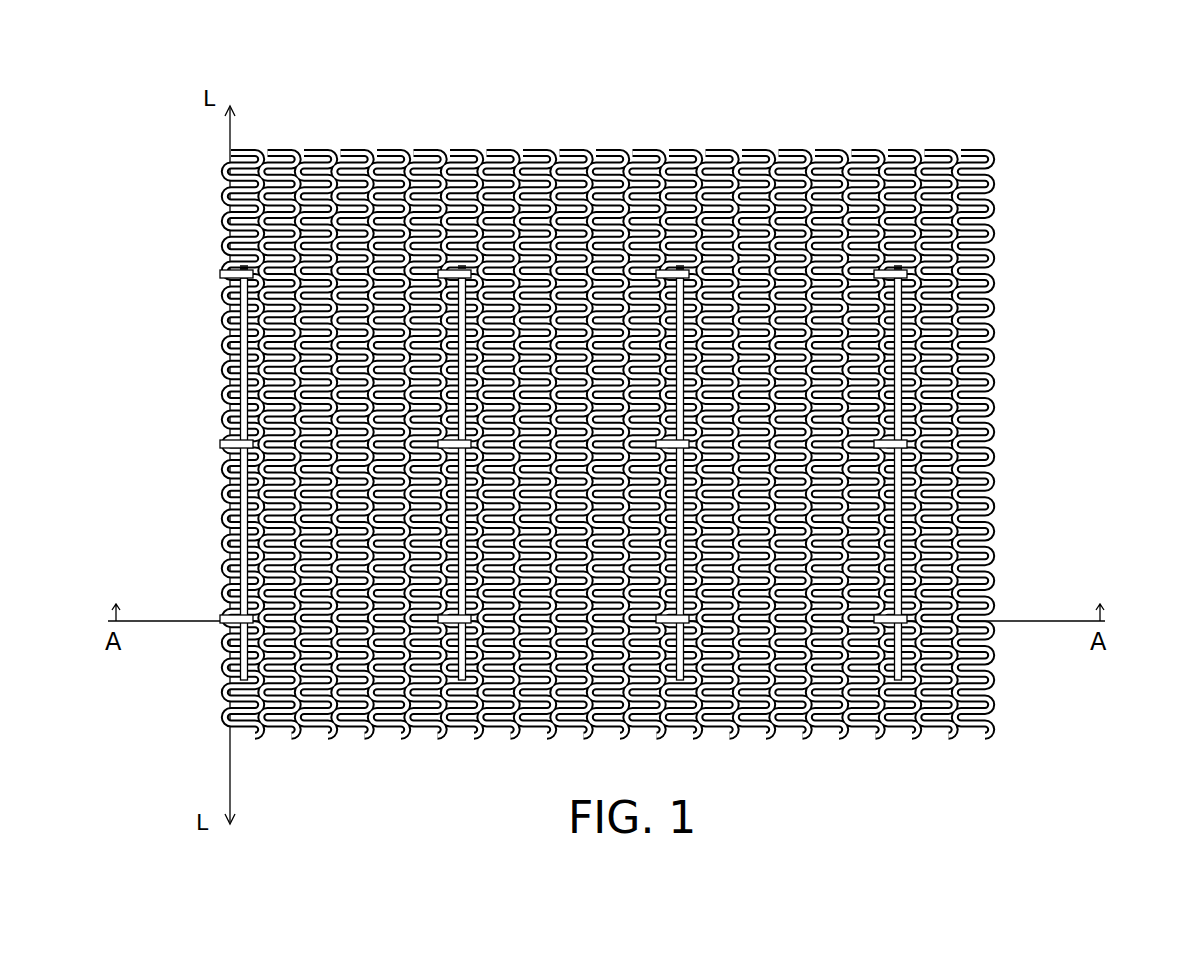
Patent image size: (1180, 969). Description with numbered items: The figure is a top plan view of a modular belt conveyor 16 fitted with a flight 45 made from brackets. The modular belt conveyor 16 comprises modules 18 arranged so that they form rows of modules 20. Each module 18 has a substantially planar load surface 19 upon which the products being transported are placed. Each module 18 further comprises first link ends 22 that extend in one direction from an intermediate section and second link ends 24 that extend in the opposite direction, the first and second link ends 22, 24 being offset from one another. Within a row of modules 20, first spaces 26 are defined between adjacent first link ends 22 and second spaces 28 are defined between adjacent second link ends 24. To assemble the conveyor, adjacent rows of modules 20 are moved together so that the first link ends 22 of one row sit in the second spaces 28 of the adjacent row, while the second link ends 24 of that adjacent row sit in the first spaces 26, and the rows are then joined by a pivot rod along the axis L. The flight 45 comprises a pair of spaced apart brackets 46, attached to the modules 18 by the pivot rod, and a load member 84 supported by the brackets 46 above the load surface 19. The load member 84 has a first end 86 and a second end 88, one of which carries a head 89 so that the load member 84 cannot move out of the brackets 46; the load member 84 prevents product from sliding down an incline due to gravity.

The modular belt conveyor 16 is at (1005, 134).
The module 18 is at (465, 160).
The load surface 19 is at (244, 270).
The row of modules 20 is at (572, 150).
The first link ends 22 is at (224, 190).
The second link ends 24 is at (992, 182).
The first spaces 26 is at (221, 311).
The second spaces 28 is at (984, 255).
The flight 45 is at (462, 270).
The brackets 46 is at (241, 270).
The load member 84 is at (500, 277).
The first end 86 is at (242, 270).
The second end 88 is at (233, 626).
The head 89 is at (916, 736).